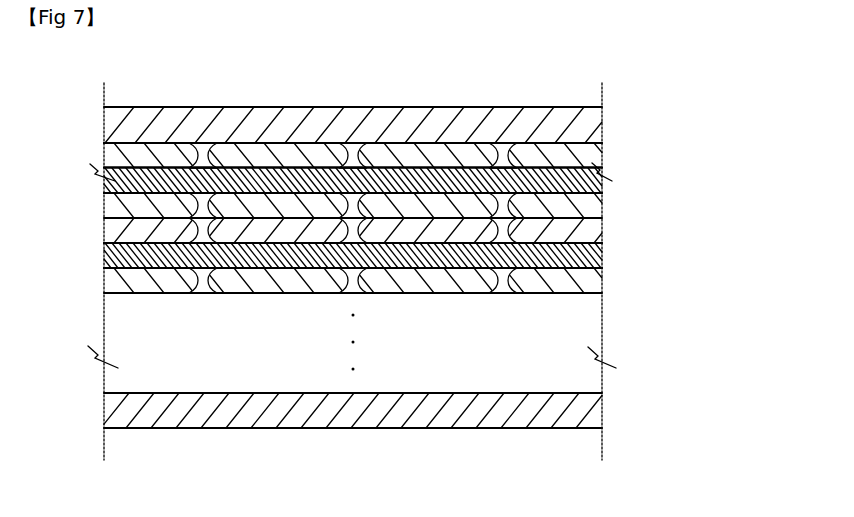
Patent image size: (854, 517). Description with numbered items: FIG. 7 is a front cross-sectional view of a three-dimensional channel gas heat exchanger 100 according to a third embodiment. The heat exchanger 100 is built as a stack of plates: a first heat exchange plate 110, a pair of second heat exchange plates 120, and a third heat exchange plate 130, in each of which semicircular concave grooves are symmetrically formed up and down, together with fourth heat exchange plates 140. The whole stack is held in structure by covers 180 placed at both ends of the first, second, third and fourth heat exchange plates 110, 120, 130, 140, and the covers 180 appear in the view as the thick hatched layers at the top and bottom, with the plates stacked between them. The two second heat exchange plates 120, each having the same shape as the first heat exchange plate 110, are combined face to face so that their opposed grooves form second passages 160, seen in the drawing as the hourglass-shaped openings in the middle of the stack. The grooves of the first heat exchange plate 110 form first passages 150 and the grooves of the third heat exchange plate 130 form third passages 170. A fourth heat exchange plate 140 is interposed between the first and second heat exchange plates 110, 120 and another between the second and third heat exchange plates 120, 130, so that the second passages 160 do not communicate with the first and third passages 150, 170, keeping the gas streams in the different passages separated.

The 3-D channel gas heat exchanger 100 is at (196, 93).
The first heat exchange plate 110 is at (387, 180).
The second heat exchange plate 120 is at (388, 154).
The third heat exchange plate 130 is at (387, 117).
The fourth heat exchange plate 140 is at (603, 181).
The first passage 150 is at (492, 280).
The second passage 160 is at (510, 203).
The third passage 170 is at (498, 155).
The cover 180 is at (281, 107).